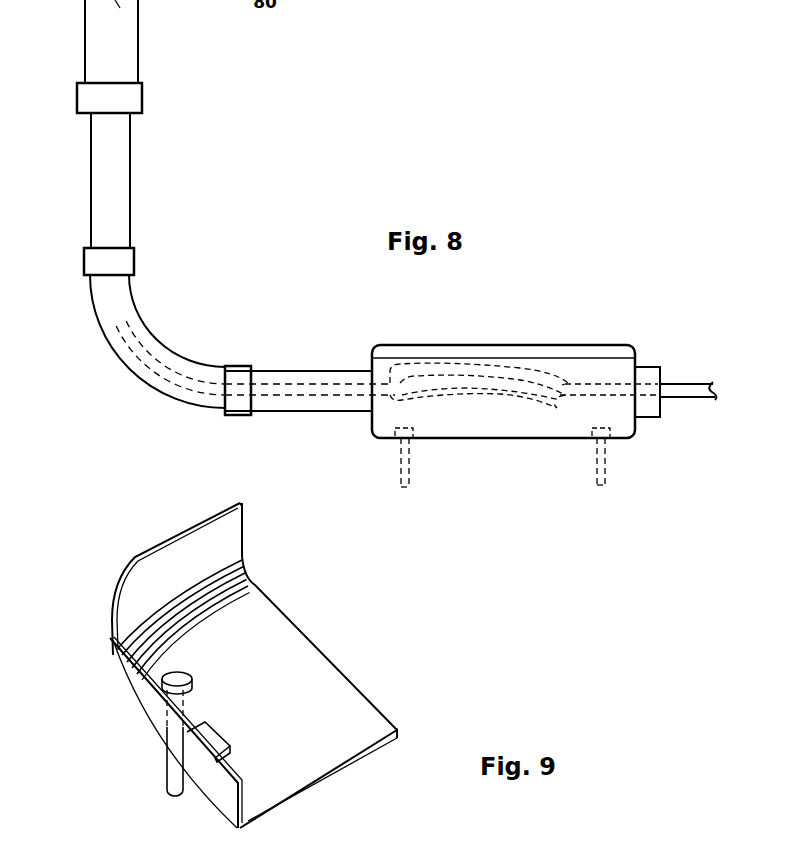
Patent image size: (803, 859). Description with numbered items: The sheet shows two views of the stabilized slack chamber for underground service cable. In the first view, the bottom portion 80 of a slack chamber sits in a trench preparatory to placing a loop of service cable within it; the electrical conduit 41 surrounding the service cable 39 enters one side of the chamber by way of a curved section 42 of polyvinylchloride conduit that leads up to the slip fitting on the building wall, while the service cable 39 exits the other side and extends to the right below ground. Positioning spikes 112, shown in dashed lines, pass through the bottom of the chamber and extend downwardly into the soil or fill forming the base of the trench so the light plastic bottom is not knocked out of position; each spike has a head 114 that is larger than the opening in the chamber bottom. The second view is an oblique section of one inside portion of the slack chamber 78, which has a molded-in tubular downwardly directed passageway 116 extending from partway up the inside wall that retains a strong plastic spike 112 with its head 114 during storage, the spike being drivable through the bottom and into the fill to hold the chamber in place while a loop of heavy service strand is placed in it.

In FIG. 8, the service cable 39 is at (690, 391).
In FIG. 8, the electrical conduit 41 is at (277, 375).
In FIG. 8, the curved section 42 is at (138, 333).
In FIG. 9, the slack chamber 78 is at (168, 573).
In FIG. 8, the bottom portion of slack chamber 80 is at (475, 430).
In FIG. 8, the positioning spike 112 is at (400, 462).
In FIG. 9, the positioning spike 112 is at (167, 777).
In FIG. 8, the head 114 is at (411, 430).
In FIG. 9, the head 114 is at (177, 670).
In FIG. 9, the tubular downwardly directed passageway 116 is at (172, 737).